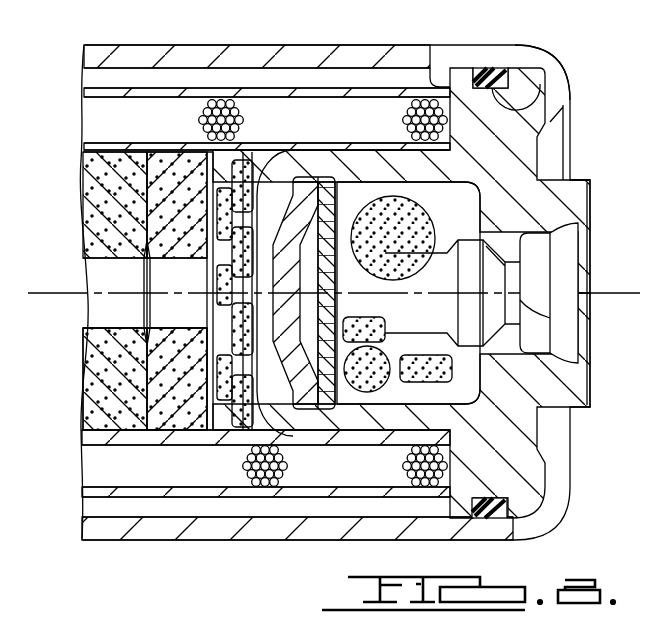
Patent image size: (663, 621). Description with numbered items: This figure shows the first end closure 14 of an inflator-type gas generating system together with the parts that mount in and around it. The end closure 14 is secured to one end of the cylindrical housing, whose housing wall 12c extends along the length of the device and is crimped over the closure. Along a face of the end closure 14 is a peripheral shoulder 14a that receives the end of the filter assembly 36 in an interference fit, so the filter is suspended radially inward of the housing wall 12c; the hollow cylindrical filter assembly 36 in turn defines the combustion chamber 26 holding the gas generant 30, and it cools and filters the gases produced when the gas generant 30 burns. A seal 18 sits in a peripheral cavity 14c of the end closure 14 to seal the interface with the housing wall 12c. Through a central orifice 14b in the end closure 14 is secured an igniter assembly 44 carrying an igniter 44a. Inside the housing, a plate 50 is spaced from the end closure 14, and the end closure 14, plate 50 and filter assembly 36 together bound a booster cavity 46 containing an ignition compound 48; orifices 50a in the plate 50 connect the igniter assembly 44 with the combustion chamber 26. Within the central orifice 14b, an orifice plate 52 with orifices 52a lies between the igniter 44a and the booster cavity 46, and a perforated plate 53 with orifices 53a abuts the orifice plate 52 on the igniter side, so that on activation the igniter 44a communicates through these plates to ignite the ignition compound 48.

The housing wall 12c is at (255, 60).
The filter assembly 36 is at (203, 88).
The ignition compound 48 is at (200, 128).
The combustion chamber 26 is at (150, 152).
The gas generant 30 is at (115, 374).
The orifice 50a is at (200, 312).
The plate 50 is at (193, 420).
The booster cavity 46 is at (220, 420).
The orifice plate 52 is at (320, 430).
The perforated plate 53 is at (322, 185).
The orifice 52a is at (470, 310).
The orifice 53a is at (362, 375).
The first end closure 14 is at (512, 416).
The peripheral shoulder 14a is at (434, 72).
The central orifice 14b is at (494, 236).
The peripheral cavity 14c is at (552, 70).
The seal 18 is at (493, 95).
The igniter assembly 44 is at (590, 404).
The igniter 44a is at (550, 318).